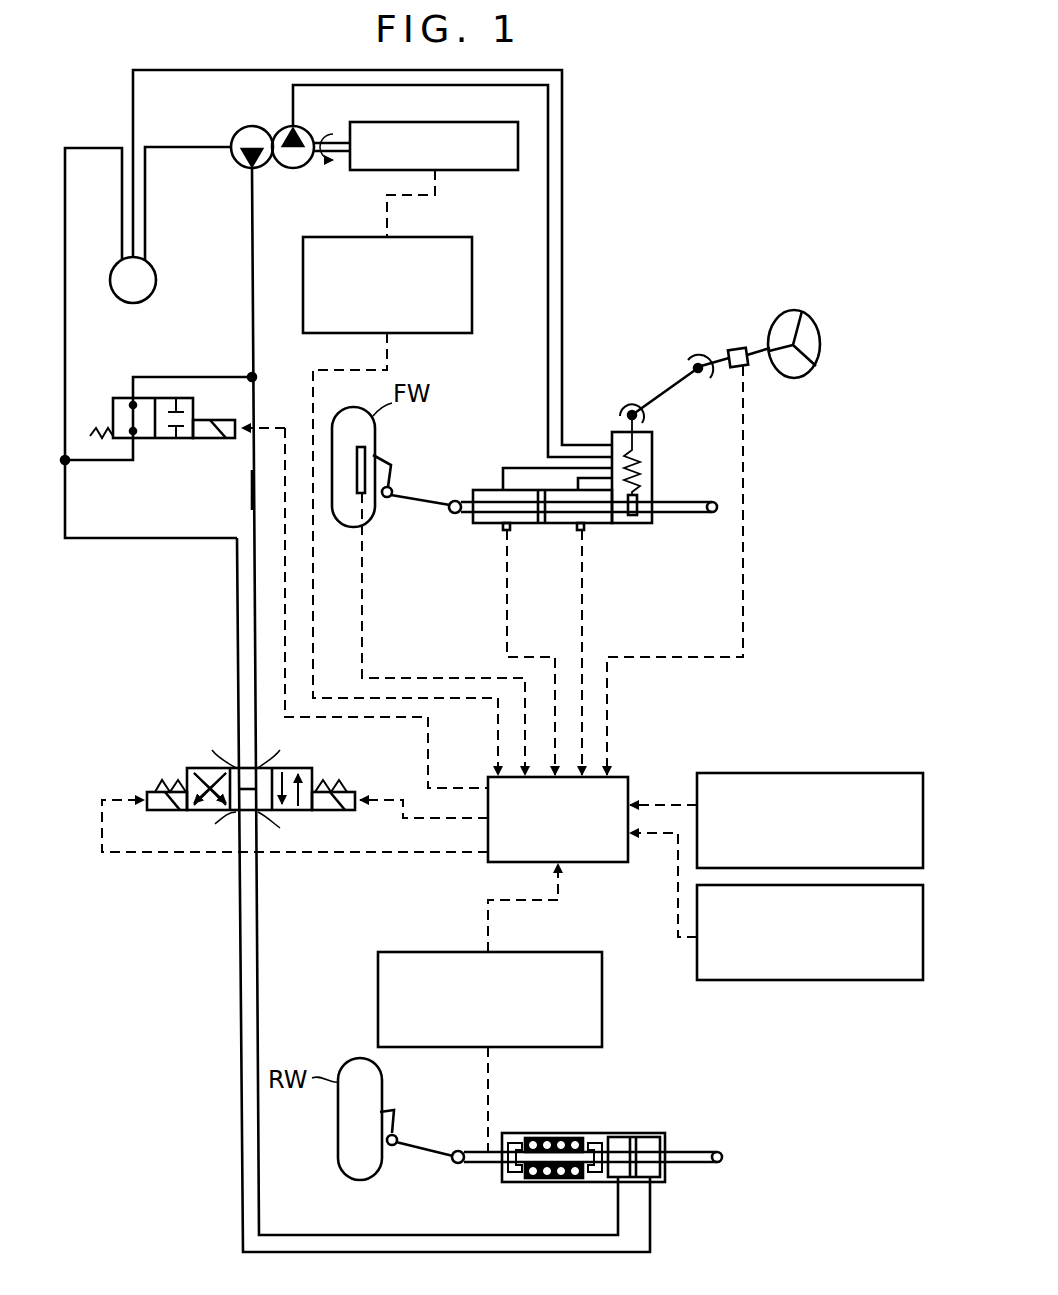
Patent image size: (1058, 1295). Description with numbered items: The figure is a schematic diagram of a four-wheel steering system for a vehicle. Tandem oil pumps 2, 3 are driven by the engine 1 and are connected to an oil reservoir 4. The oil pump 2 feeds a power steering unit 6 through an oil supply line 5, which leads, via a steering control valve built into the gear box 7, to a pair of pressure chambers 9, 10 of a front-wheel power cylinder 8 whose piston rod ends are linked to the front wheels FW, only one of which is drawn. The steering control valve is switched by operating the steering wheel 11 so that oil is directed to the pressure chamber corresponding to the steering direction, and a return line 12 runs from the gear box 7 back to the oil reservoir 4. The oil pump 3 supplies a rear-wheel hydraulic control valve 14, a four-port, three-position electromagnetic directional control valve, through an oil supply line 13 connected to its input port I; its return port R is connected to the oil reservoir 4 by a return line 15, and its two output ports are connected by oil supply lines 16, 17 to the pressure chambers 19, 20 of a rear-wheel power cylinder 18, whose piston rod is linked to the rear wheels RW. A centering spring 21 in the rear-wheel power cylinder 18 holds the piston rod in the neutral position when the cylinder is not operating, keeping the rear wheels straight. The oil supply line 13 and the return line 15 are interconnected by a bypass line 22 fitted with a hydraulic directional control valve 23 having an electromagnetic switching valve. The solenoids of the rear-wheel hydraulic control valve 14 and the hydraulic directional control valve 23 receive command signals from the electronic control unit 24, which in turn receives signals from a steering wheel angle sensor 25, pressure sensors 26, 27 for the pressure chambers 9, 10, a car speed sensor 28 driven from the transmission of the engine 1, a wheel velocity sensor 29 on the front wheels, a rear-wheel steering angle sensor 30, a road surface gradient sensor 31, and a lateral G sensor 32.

The engine 1 is at (494, 170).
The oil pump 2 is at (277, 127).
The oil pump 3 is at (236, 127).
The oil reservoir 4 is at (156, 280).
The oil supply line 5 is at (546, 362).
The power steering unit 6 is at (567, 597).
The gear box 7 is at (652, 452).
The front-wheel power cylinder 8 is at (473, 523).
The pressure chamber 9 is at (485, 490).
The pressure chamber 10 is at (553, 523).
The steering wheel 11 is at (795, 378).
The return line 12 is at (563, 300).
The oil supply line 13 is at (252, 490).
The rear-wheel hydraulic control valve 14 is at (166, 766).
The return line 15 is at (152, 538).
The oil supply line 16 is at (238, 987).
The oil supply line 17 is at (261, 987).
The rear-wheel power cylinder 18 is at (589, 1143).
The pressure chamber 19 is at (619, 1137).
The pressure chamber 20 is at (650, 1137).
The centering spring 21 is at (527, 1182).
The bypass line 22 is at (197, 377).
The hydraulic directional control valve 23 is at (120, 398).
The electronic control unit 24 is at (528, 866).
The steering wheel angle sensor 25 is at (735, 348).
The pressure sensor 26 is at (503, 528).
The pressure sensor 27 is at (584, 528).
The car speed sensor 28 is at (472, 253).
The wheel velocity sensor 29 is at (366, 462).
The rear-wheel steering angle sensor 30 is at (573, 952).
The road surface gradient sensor 31 is at (876, 773).
The lateral G sensor 32 is at (876, 980).